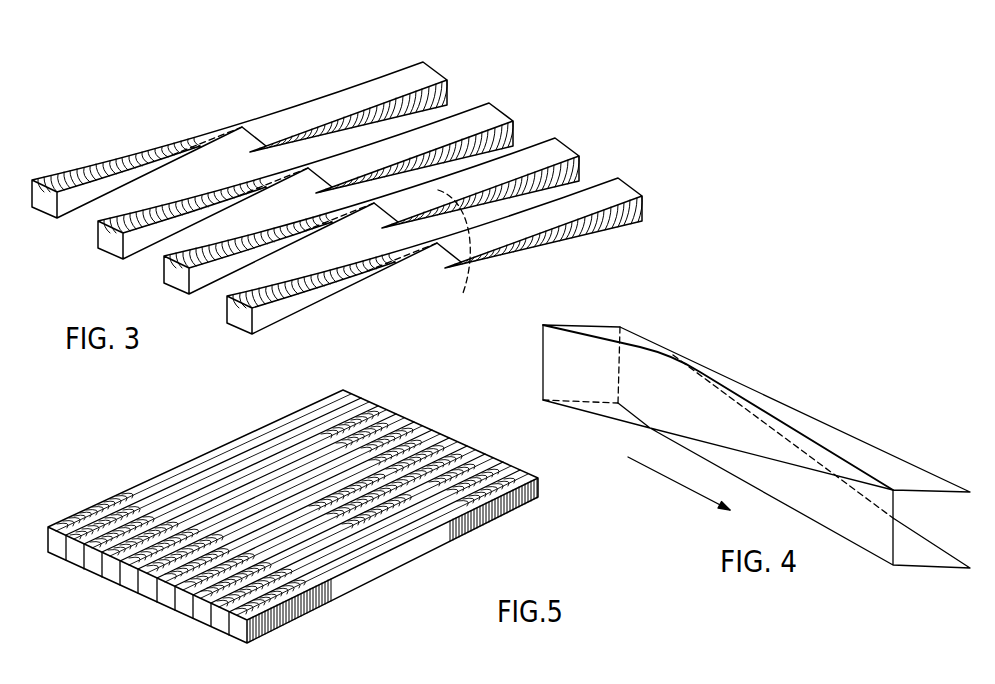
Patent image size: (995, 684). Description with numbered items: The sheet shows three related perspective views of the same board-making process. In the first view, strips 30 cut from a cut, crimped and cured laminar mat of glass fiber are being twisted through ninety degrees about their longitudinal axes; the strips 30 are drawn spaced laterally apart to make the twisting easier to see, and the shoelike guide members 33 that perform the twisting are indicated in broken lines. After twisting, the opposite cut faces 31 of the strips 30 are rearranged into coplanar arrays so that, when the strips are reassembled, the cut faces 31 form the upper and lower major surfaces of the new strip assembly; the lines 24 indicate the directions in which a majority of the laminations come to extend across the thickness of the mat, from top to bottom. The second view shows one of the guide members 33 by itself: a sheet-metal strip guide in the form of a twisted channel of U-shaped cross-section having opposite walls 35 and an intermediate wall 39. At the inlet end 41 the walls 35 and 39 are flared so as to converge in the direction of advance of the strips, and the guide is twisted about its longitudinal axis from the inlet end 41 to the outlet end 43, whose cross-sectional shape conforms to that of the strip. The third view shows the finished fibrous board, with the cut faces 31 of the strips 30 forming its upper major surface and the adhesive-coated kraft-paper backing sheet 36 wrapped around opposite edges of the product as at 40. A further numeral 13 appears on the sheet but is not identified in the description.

In FIG. 3, the strip element 13 is at (363, 280).
In FIG. 3, the lines 24 is at (283, 308).
In FIG. 3, the strips 30 is at (488, 102).
In FIG. 5, the strips 30 is at (243, 635).
In FIG. 3, the cut faces 31 is at (577, 171).
In FIG. 5, the cut faces 31 is at (457, 452).
In FIG. 3, the guide members 33 is at (345, 100).
In FIG. 4, the opposite walls 35 is at (920, 547).
In FIG. 5, the backing sheet 36 is at (135, 593).
In FIG. 4, the intermediate wall 39 is at (867, 545).
In FIG. 5, the wrapped edges of backing sheet 40 is at (362, 573).
In FIG. 3, the inlet end 41 is at (526, 371).
In FIG. 4, the outlet end 43 is at (918, 575).